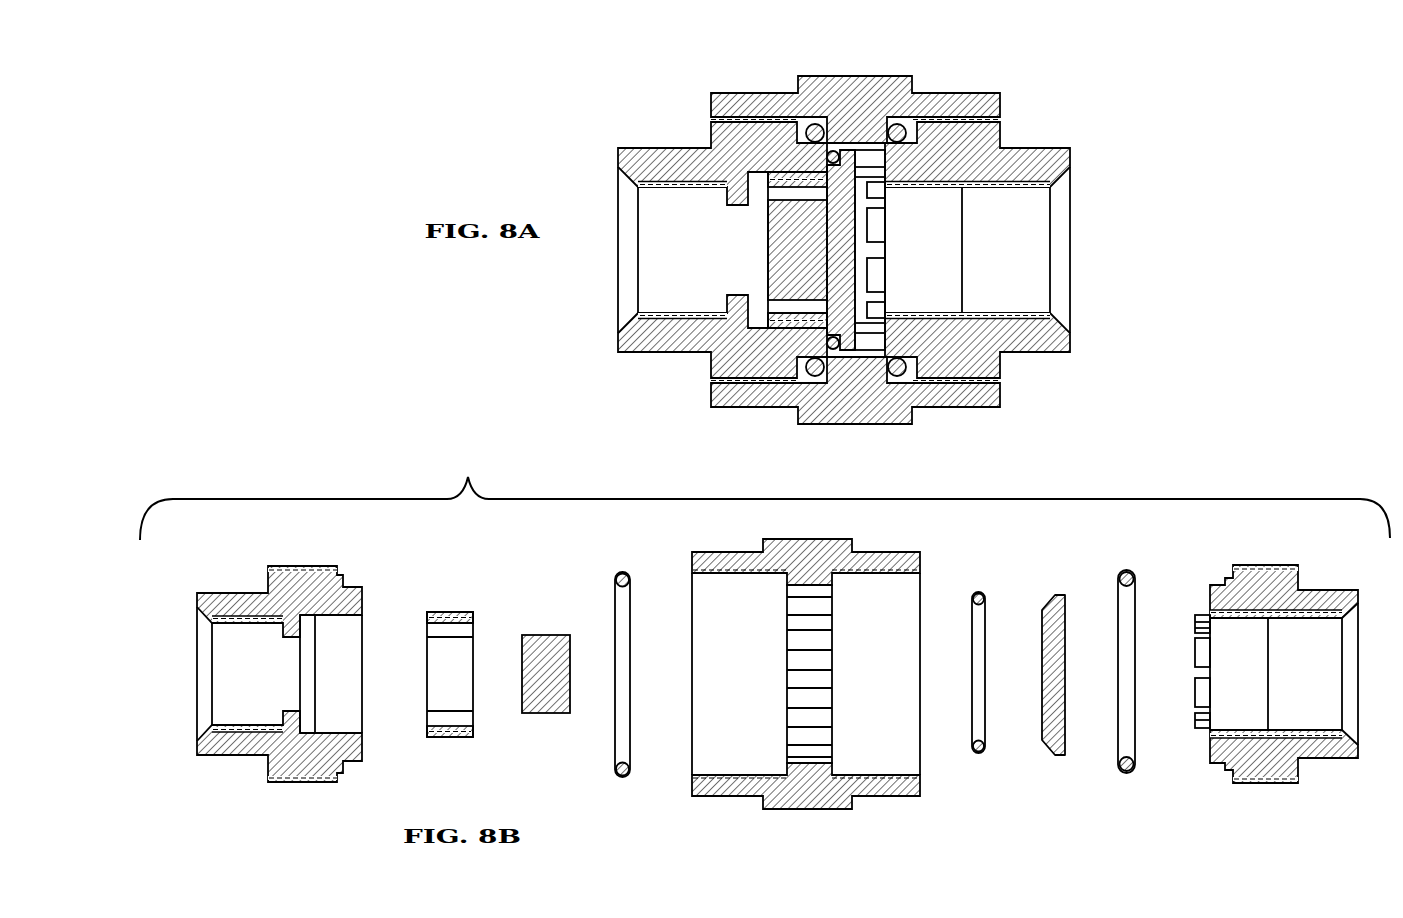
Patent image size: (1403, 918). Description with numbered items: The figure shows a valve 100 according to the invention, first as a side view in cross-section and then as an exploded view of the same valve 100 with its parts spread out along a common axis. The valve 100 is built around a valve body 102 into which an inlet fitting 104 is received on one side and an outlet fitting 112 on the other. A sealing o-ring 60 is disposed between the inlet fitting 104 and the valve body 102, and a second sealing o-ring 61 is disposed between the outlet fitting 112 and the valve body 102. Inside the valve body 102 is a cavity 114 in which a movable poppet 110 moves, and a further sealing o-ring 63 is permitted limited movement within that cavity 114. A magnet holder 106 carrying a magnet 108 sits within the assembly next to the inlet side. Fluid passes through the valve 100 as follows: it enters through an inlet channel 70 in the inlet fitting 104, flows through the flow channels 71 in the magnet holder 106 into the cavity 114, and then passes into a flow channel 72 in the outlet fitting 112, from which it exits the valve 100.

In FIG. 8A, the valve 100 is at (916, 70).
In FIG. 8B, the valve 100 is at (466, 468).
In FIG. 8A, the valve body 102 is at (775, 97).
In FIG. 8B, the valve body 102 is at (775, 539).
In FIG. 8A, the inlet fitting 104 is at (637, 354).
In FIG. 8B, the inlet fitting 104 is at (297, 568).
In FIG. 8A, the outlet fitting 112 is at (1008, 347).
In FIG. 8B, the outlet fitting 112 is at (1270, 565).
In FIG. 8A, the inlet channel 70 is at (678, 215).
In FIG. 8B, the inlet channel 70 is at (238, 642).
In FIG. 8A, the flow channel 72 is at (1030, 210).
In FIG. 8B, the flow channel 72 is at (1245, 642).
In FIG. 8A, the flow channels 71 is at (782, 193).
In FIG. 8B, the flow channels 71 is at (435, 632).
In FIG. 8A, the magnet holder 106 is at (773, 327).
In FIG. 8B, the magnet holder 106 is at (457, 612).
In FIG. 8A, the magnet 108 is at (770, 275).
In FIG. 8B, the magnet 108 is at (548, 635).
In FIG. 8A, the movable poppet 110 is at (848, 340).
In FIG. 8B, the movable poppet 110 is at (1060, 595).
In FIG. 8A, the cavity 114 is at (868, 142).
In FIG. 8A, the sealing o-ring 60 is at (805, 371).
In FIG. 8B, the sealing o-ring 60 is at (623, 776).
In FIG. 8A, the sealing o-ring 61 is at (912, 373).
In FIG. 8B, the sealing o-ring 61 is at (1128, 771).
In FIG. 8A, the sealing o-ring 63 is at (834, 152).
In FIG. 8B, the sealing o-ring 63 is at (978, 752).